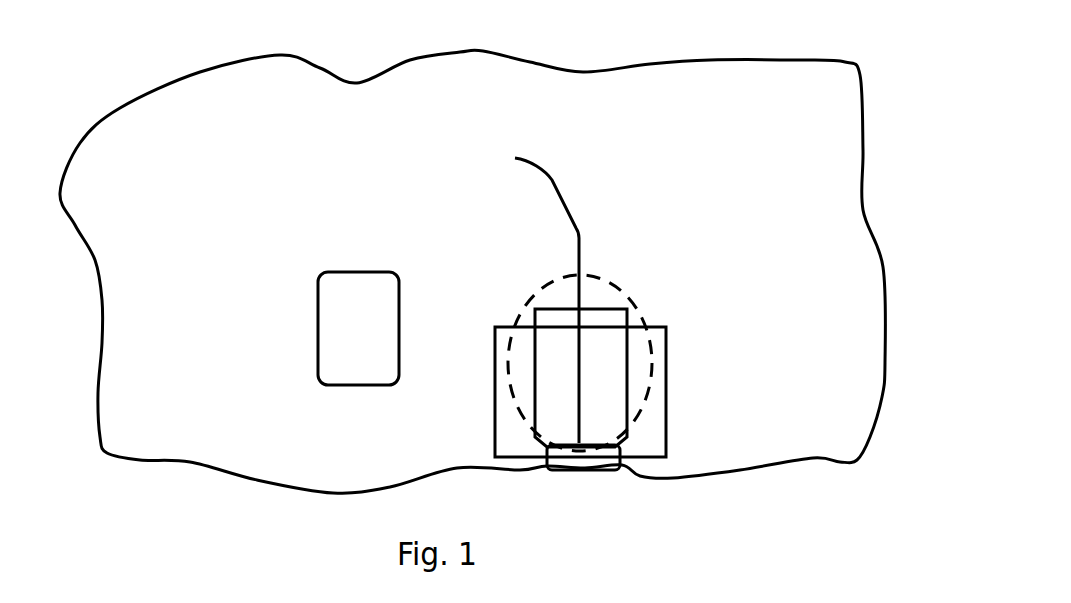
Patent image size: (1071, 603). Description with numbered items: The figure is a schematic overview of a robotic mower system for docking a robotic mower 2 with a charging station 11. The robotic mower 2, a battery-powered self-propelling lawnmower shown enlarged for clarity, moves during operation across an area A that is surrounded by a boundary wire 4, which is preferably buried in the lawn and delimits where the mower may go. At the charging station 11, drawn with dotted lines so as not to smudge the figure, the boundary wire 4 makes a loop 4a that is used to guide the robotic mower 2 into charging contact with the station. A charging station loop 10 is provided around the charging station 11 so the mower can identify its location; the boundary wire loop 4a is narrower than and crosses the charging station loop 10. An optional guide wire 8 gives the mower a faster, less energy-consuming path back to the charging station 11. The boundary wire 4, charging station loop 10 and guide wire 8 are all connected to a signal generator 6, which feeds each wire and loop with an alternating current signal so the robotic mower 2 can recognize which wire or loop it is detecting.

The boundary wire 4 is at (710, 60).
The boundary wire loop 4a is at (607, 308).
The guide wire 8 is at (547, 177).
The charging station loop 10 is at (666, 380).
The charging station 11 is at (530, 300).
The signal generator 6 is at (570, 463).
The robotic mower 2 is at (358, 328).
The area A is at (328, 200).